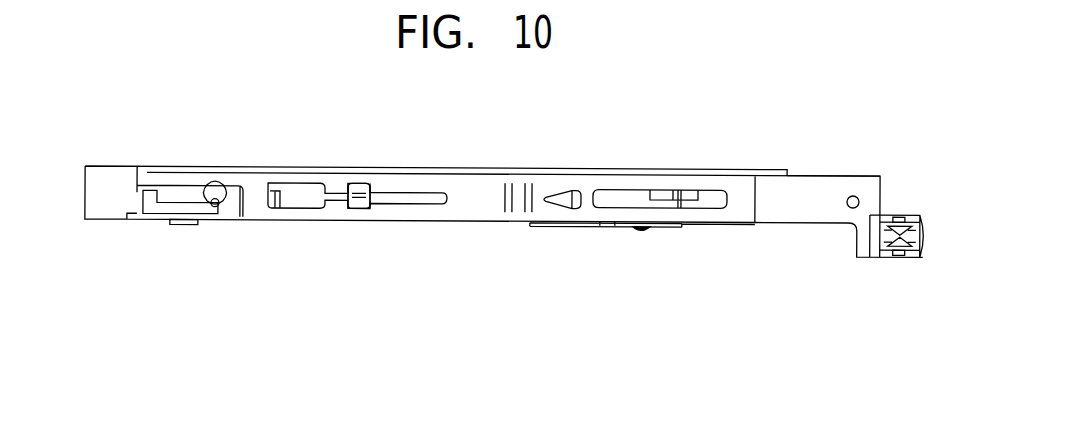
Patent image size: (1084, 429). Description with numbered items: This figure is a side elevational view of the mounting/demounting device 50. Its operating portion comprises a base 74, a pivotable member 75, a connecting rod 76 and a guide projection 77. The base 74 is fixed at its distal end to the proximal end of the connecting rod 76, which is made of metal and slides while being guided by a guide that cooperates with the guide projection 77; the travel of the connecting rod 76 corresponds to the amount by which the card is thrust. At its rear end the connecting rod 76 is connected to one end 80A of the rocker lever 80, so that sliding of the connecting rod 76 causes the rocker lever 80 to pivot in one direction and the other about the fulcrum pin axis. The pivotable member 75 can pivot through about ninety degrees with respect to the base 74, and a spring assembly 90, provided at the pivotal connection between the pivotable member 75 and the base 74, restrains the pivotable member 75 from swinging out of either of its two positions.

The mounting/demounting device 50 is at (650, 250).
The base 74 is at (815, 216).
The pivotable member 75 is at (924, 237).
The connecting rod 76 is at (484, 207).
The guide projection 77 is at (361, 205).
The rocker lever 80 is at (157, 226).
The one end of the rocker lever 80A is at (215, 207).
The spring assembly 90 is at (898, 254).